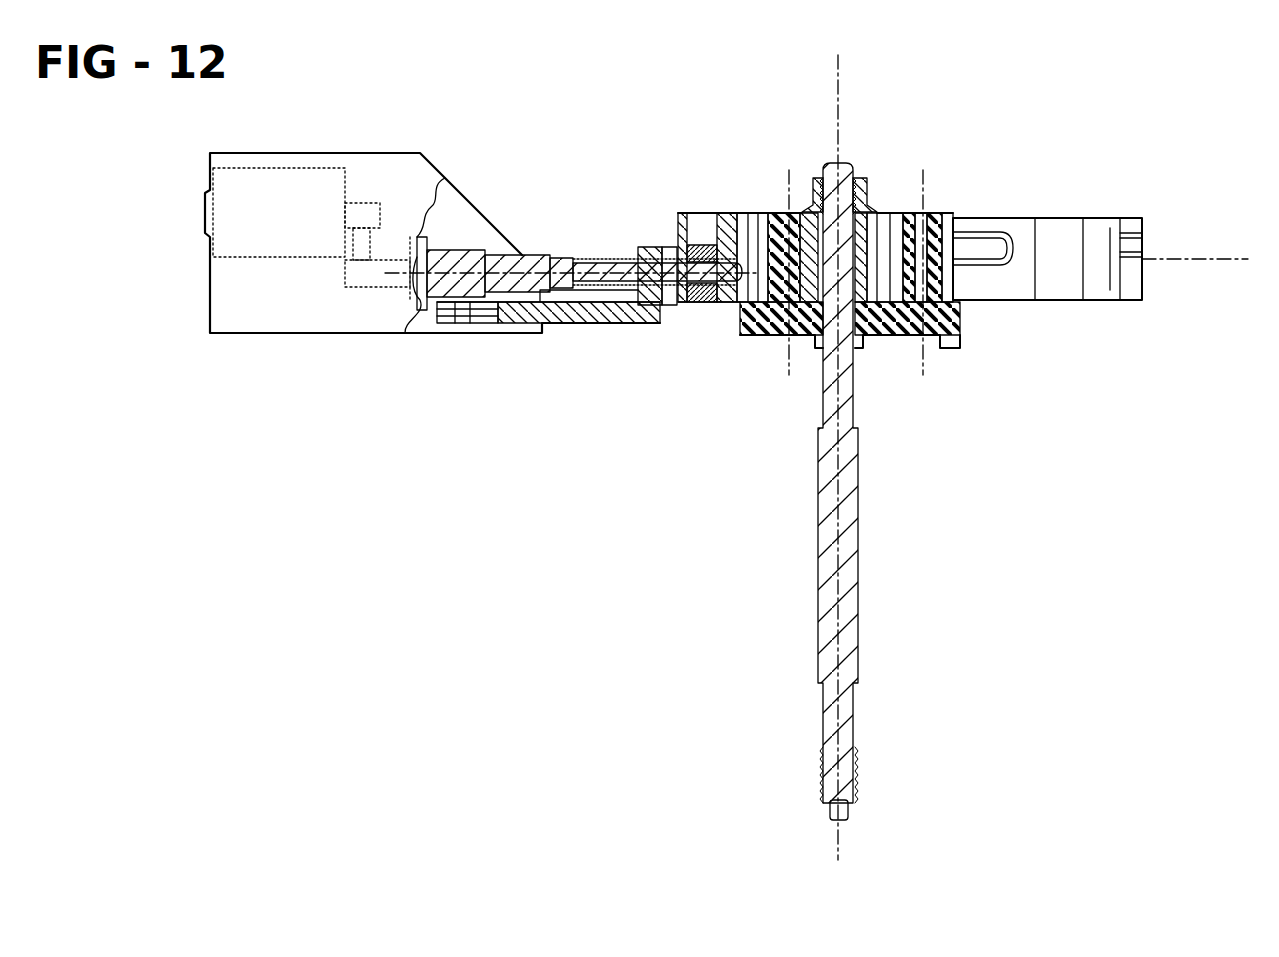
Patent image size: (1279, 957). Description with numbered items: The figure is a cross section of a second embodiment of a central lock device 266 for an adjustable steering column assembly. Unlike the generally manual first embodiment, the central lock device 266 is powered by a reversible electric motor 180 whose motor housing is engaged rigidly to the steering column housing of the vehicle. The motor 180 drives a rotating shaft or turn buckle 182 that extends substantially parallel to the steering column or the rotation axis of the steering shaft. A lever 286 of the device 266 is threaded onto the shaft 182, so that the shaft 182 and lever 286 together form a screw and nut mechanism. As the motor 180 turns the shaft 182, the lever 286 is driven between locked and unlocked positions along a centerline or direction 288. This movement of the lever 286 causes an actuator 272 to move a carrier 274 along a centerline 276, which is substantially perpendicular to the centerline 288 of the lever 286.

The reversible electric motor 180 is at (389, 135).
The rotating shaft or turn buckle 182 is at (590, 257).
The central lock device 266 is at (158, 275).
The actuator 272 is at (903, 356).
The carrier 274 is at (852, 517).
The centerline 276 is at (838, 108).
The lever 286 is at (1060, 225).
The centerline or direction 288 is at (1193, 260).